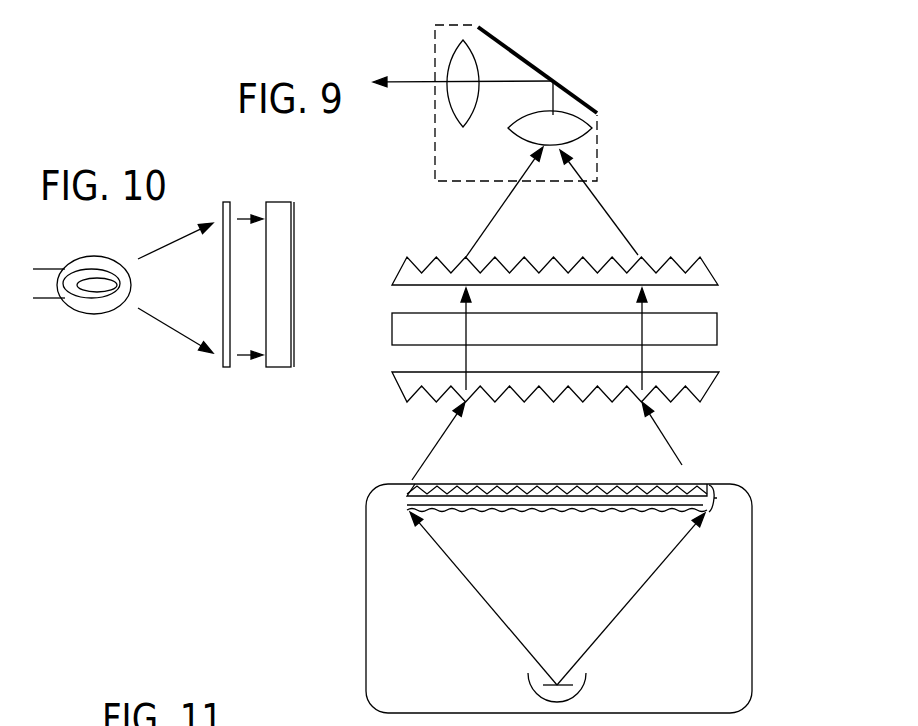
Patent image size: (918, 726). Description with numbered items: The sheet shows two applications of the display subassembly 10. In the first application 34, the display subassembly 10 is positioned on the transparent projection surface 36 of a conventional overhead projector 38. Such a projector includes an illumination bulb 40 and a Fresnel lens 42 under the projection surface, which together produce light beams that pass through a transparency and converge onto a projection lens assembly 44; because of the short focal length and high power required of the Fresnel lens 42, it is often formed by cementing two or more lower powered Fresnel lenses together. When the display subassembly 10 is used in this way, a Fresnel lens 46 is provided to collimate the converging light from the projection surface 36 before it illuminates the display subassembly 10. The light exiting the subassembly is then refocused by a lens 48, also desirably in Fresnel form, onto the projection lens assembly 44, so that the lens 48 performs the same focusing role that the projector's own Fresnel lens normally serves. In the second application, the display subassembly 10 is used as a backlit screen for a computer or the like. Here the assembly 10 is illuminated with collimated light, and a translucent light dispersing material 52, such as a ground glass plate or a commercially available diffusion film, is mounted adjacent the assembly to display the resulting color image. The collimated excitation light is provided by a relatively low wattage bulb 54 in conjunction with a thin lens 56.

In FIG. 9, the display subassembly 10 is at (717, 328).
In FIG. 10, the display subassembly 10 is at (273, 367).
In FIG. 9, the first application 34 is at (741, 154).
In FIG. 9, the transparent projection surface 36 is at (653, 484).
In FIG. 9, the overhead projector 38 is at (764, 578).
In FIG. 9, the illumination bulb 40 is at (586, 677).
In FIG. 9, the Fresnel lens 42 is at (717, 498).
In FIG. 9, the projection lens assembly 44 is at (598, 150).
In FIG. 9, the Fresnel lens 46 is at (710, 384).
In FIG. 9, the lens 48 is at (712, 270).
In FIG. 10, the translucent light dispersing material 52 is at (297, 340).
In FIG. 10, the bulb 54 is at (93, 314).
In FIG. 10, the thin lens 56 is at (225, 368).